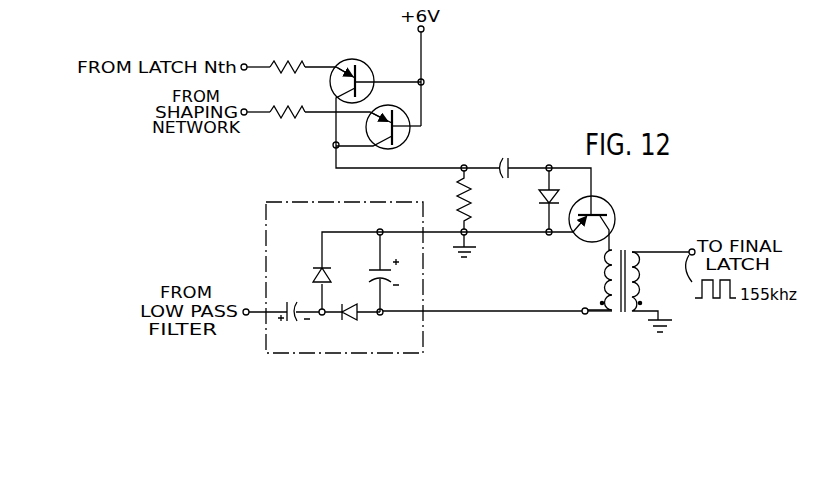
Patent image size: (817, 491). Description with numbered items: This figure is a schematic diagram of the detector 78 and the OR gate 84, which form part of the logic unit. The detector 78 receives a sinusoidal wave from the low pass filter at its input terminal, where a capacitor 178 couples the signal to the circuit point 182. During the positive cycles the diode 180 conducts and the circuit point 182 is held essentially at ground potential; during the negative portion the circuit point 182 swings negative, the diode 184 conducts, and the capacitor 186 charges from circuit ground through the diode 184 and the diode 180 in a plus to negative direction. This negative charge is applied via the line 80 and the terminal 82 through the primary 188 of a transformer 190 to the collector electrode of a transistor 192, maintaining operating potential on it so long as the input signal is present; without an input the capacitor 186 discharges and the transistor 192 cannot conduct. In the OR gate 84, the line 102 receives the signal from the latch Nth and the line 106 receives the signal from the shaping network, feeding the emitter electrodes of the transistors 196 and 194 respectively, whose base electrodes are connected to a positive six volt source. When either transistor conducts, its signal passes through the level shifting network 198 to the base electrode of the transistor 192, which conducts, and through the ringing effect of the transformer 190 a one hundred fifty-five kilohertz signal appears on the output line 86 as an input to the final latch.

The detector 78 is at (266, 222).
The line 80 is at (531, 310).
The terminal 82 is at (584, 307).
The OR gate 84 is at (515, 131).
The line 86 is at (690, 249).
The line 102 is at (257, 64).
The line 106 is at (256, 116).
The input capacitor 178 is at (289, 306).
The diode 180 is at (313, 276).
The circuit point 182 is at (325, 316).
The diode 184 is at (350, 300).
The capacitor 186 is at (368, 275).
The primary 188 is at (606, 266).
The transformer 190 is at (622, 250).
The transistor 192 is at (604, 209).
The transistor 194 is at (388, 149).
The transistor 196 is at (371, 66).
The level shifting network 198 is at (524, 210).